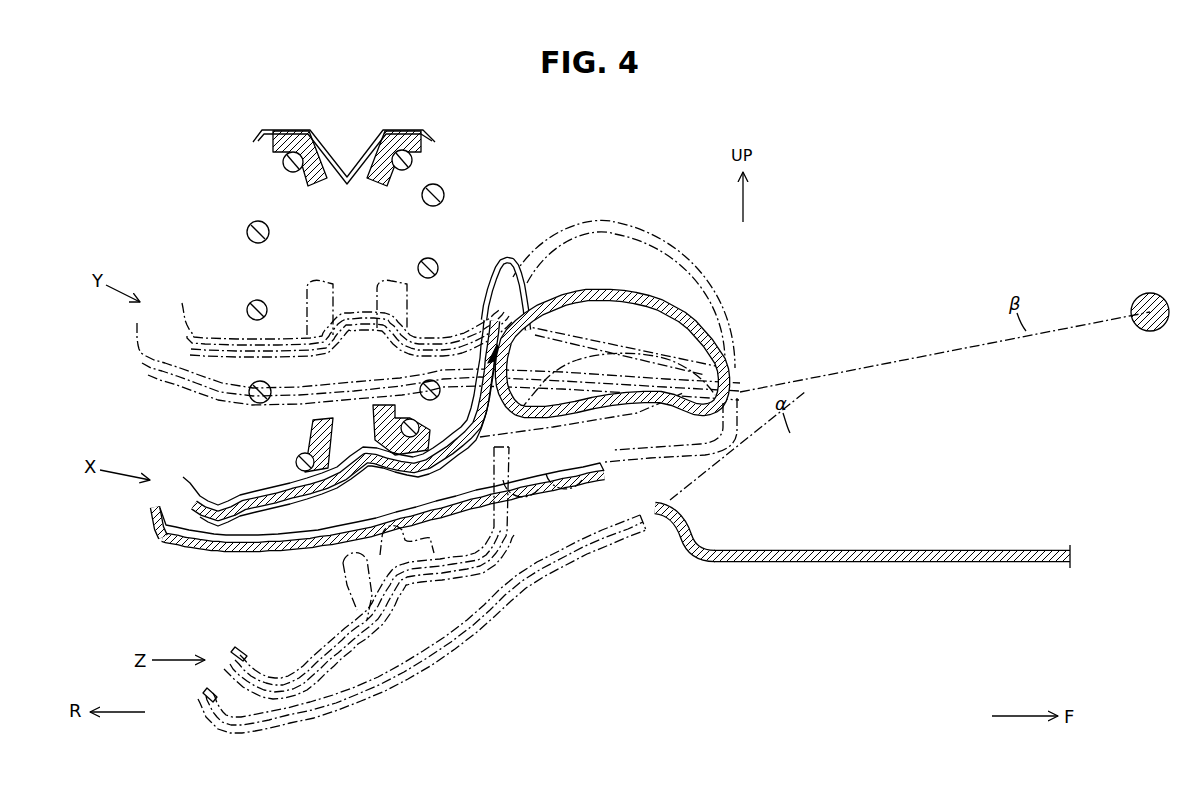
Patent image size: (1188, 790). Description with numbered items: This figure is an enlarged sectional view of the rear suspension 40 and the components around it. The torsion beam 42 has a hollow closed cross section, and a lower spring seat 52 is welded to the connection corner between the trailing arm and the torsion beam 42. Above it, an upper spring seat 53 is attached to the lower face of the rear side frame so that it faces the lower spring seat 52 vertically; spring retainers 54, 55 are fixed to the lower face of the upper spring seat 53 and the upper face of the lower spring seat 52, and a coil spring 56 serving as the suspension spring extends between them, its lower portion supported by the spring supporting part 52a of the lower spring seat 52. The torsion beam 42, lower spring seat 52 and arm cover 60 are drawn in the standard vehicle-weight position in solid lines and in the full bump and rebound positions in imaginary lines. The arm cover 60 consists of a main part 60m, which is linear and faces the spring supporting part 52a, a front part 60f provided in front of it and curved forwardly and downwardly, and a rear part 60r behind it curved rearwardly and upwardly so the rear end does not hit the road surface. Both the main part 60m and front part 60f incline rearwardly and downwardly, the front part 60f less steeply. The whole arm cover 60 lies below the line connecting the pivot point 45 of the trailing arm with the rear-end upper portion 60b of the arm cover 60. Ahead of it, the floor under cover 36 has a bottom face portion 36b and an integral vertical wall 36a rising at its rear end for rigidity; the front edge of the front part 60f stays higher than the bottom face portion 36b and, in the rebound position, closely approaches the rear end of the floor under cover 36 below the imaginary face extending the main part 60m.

The floor under cover 36 is at (862, 544).
The vertical wall 36a is at (695, 527).
The bottom face portion 36b is at (741, 562).
The rear suspension 40 is at (748, 368).
The torsion beam 42 is at (612, 289).
The pivot point 45 is at (1144, 293).
The lower spring seat 52 is at (355, 393).
The spring supporting part 52a is at (392, 470).
The upper spring seat 53 is at (405, 132).
The spring retainer 54 is at (313, 186).
The spring retainer 55 is at (306, 440).
The coil spring 56 is at (247, 232).
The arm cover 60 is at (399, 565).
The rear-end upper portion 60b is at (143, 504).
The rear part 60r is at (200, 554).
The front part 60f is at (555, 488).
The main part 60m is at (405, 572).